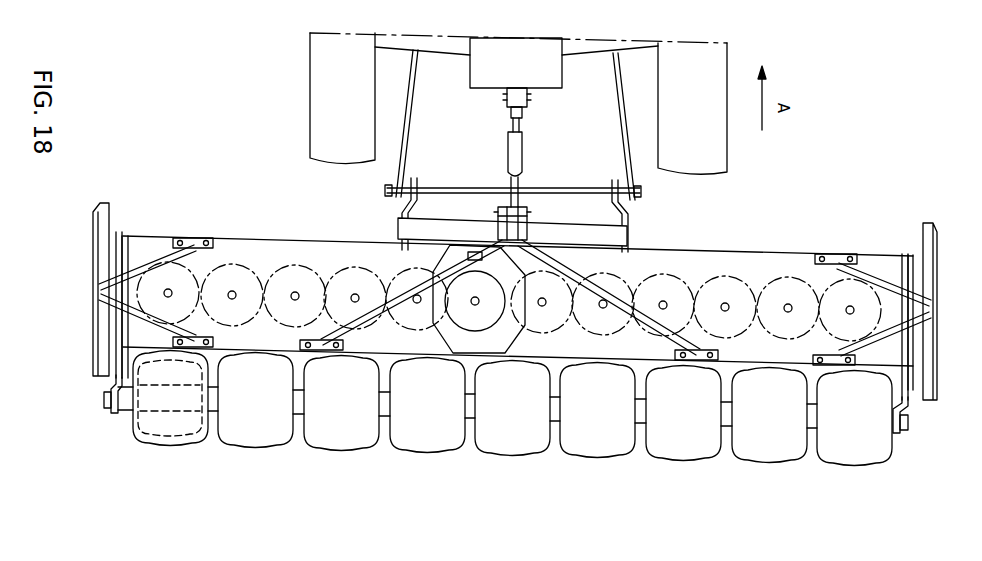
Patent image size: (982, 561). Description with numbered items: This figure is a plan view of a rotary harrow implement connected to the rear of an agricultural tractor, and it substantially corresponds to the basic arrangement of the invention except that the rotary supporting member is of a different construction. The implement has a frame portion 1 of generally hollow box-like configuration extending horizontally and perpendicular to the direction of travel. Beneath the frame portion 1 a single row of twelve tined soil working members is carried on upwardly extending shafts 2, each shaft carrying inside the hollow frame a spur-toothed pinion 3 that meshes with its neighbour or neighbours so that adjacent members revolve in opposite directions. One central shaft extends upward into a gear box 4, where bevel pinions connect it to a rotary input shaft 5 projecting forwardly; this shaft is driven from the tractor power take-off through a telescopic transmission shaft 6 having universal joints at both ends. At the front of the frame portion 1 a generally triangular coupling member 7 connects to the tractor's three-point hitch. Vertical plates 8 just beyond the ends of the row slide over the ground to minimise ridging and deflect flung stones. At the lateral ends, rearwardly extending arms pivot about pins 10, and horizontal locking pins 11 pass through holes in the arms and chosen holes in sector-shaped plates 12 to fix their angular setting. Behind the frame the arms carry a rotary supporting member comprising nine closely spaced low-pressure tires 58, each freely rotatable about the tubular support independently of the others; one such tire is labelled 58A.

The frame portion 1 is at (318, 243).
The shafts 2 is at (299, 296).
The pinions 3 is at (261, 281).
The gear box 4 is at (500, 300).
The rotary input shaft 5 is at (476, 243).
The telescopic transmission shaft 6 is at (503, 168).
The coupling member 7 is at (598, 233).
The plates 8 is at (95, 257).
The pins 10 is at (118, 230).
The locking pins 11 is at (97, 338).
The sector-shaped plates 12 is at (147, 243).
The low-pressure tires 58 is at (185, 437).
The roller 58A is at (421, 455).